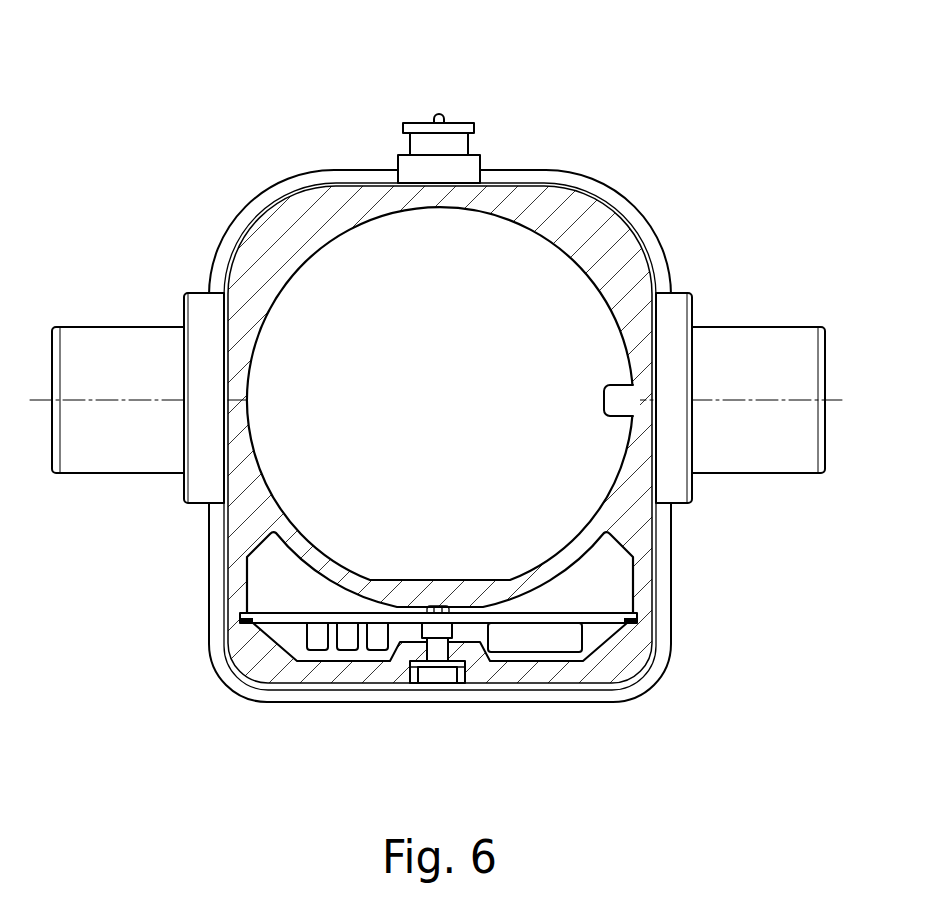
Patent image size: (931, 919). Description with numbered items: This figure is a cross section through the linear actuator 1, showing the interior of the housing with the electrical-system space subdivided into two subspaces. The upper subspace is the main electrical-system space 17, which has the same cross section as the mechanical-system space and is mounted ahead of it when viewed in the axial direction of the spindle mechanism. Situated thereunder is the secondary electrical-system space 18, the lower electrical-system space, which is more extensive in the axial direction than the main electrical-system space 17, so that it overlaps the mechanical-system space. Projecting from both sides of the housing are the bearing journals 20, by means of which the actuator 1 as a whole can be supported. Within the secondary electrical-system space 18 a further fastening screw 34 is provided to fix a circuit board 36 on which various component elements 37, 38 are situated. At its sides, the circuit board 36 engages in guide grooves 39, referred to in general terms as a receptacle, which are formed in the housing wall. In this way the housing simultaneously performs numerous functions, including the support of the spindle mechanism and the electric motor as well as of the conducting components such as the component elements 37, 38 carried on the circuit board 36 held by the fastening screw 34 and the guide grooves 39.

The actuator 1 is at (589, 103).
The main electrical-system space 17 is at (377, 317).
The secondary electrical-system space 18 is at (275, 588).
The bearing journals 20 is at (120, 473).
The fastening screw 34 is at (438, 670).
The circuit board 36 is at (600, 613).
The component element 37 is at (375, 640).
The component element 38 is at (525, 638).
The guide grooves 39 is at (238, 620).